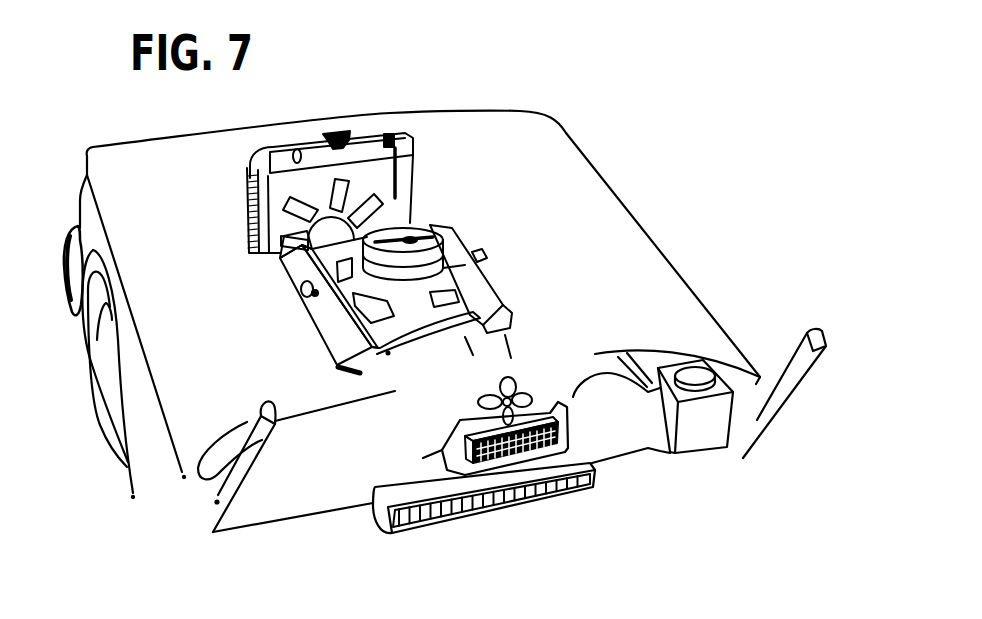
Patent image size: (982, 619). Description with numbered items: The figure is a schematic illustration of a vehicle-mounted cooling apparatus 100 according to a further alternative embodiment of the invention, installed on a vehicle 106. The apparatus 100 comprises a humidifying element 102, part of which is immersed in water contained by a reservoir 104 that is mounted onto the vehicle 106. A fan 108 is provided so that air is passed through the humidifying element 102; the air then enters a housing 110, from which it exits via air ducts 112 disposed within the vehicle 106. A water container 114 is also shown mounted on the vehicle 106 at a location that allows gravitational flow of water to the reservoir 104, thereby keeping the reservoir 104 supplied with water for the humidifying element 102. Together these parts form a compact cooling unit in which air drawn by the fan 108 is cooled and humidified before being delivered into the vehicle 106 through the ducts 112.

The vehicle-mounted cooling apparatus 100 is at (505, 445).
The humidifying element 102 is at (569, 399).
The reservoir 104 is at (637, 434).
The vehicle 106 is at (563, 152).
The fan 108 is at (510, 377).
The housing 110 is at (417, 486).
The air ducts 112 is at (470, 513).
The water container 114 is at (700, 424).